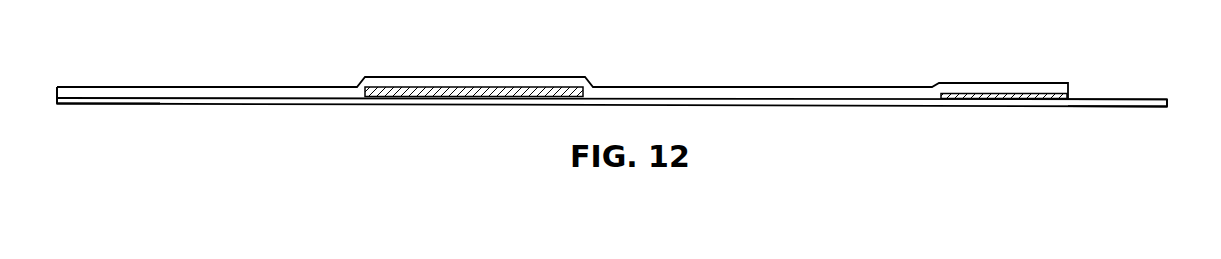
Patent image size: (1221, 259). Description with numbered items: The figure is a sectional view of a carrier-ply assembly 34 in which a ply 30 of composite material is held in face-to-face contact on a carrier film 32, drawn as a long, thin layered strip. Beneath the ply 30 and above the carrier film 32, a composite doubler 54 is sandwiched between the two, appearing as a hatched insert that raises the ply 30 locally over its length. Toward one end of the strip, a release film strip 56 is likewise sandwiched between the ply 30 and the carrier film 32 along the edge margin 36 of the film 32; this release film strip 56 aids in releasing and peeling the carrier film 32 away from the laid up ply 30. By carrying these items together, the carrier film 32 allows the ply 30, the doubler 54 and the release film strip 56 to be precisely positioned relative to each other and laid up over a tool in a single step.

The ply 30 is at (151, 91).
The carrier film 32 is at (346, 100).
The carrier-ply assembly 34 is at (219, 116).
The edge margin 36 is at (1112, 120).
The composite doubler 54 is at (461, 86).
The release film strip 56 is at (1006, 93).